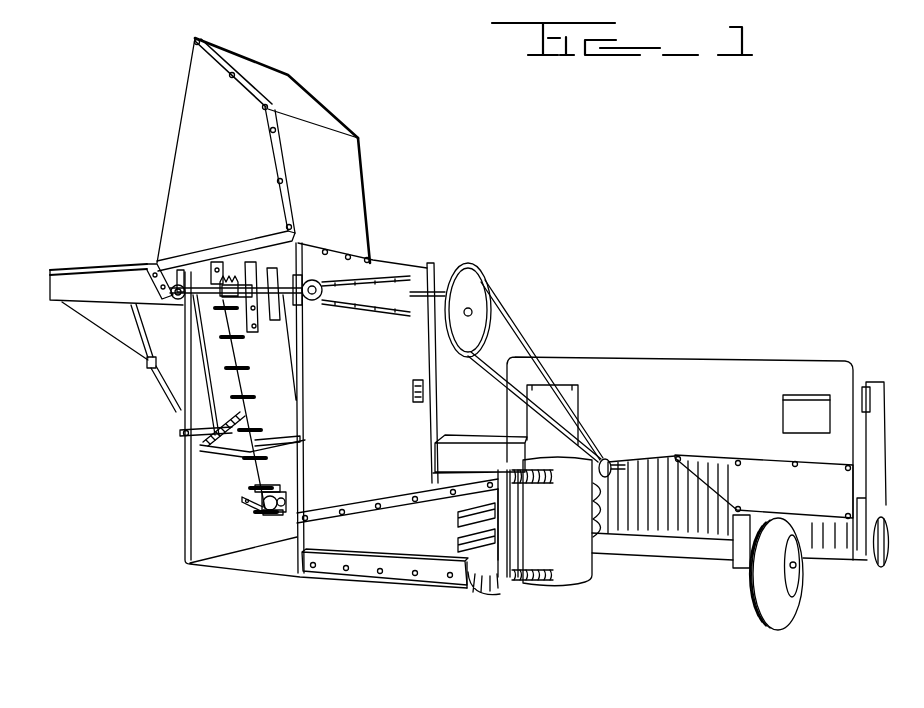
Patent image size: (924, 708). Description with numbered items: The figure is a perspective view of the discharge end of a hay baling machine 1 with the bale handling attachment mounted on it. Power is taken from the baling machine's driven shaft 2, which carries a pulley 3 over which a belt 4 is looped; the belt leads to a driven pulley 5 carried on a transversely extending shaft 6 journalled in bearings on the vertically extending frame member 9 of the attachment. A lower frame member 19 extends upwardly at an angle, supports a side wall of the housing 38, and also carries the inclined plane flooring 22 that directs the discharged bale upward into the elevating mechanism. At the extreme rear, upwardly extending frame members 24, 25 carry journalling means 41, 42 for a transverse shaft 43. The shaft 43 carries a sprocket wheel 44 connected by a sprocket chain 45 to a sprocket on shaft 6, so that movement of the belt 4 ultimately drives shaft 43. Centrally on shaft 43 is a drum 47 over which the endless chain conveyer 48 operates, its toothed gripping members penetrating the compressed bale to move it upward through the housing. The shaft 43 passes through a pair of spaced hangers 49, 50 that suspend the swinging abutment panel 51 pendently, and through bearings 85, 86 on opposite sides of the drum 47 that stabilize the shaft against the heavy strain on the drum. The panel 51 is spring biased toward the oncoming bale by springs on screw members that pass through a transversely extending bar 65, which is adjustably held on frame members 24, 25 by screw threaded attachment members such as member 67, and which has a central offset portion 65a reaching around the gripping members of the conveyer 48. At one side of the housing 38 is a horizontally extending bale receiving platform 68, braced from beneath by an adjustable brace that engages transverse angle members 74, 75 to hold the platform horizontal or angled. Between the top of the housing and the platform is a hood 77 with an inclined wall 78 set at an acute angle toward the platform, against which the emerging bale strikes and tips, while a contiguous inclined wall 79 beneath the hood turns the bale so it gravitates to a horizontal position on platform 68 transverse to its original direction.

The hay baling machine 1 is at (712, 366).
The driven shaft 2 is at (625, 460).
The pulley 3 is at (610, 460).
The belt 4 is at (520, 338).
The driven pulley 5 is at (464, 292).
The transversely extending shaft 6 is at (476, 310).
The vertically extending frame member 9 is at (432, 424).
The lower frame member 19 is at (363, 573).
The inclined plane flooring 22 is at (260, 565).
The upwardly extending frame member 24 is at (183, 348).
The upwardly extending frame member 25 is at (303, 419).
The housing 38 is at (405, 254).
The journalling means 41 is at (160, 232).
The journalling means 42 is at (303, 263).
The transverse shaft 43 is at (257, 262).
The sprocket wheel 44 is at (314, 302).
The sprocket chain 45 is at (385, 303).
The drum 47 is at (233, 262).
The endless chain conveyer 48 is at (213, 368).
The hanger 49 is at (198, 262).
The hanger 50 is at (289, 231).
The swinging abutment panel 51 is at (183, 440).
The transversely extending bar 65 is at (205, 468).
The offset portion 65a is at (250, 492).
The screw threaded adjustable attachment member 67 is at (290, 445).
The bale receiving platform 68 is at (100, 270).
The transverse angle member 74 is at (128, 312).
The transverse angle member 75 is at (68, 305).
The hood 77 is at (315, 122).
The inclined wall 78 is at (349, 175).
The contiguous inclined wall 79 is at (228, 70).
The bearing 85 is at (190, 300).
The bearing 86 is at (263, 322).